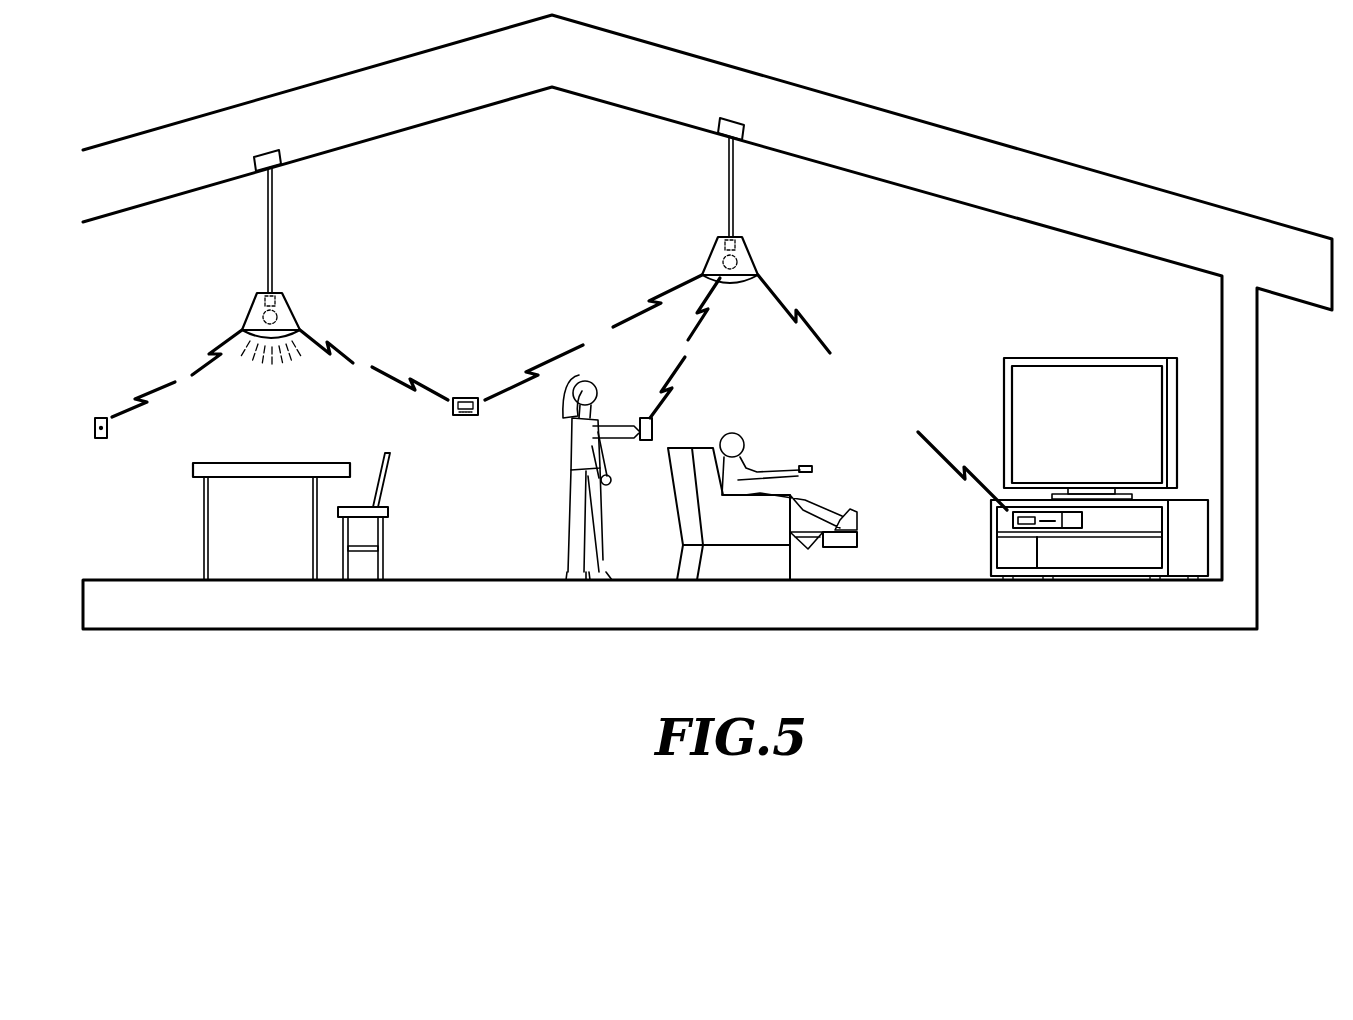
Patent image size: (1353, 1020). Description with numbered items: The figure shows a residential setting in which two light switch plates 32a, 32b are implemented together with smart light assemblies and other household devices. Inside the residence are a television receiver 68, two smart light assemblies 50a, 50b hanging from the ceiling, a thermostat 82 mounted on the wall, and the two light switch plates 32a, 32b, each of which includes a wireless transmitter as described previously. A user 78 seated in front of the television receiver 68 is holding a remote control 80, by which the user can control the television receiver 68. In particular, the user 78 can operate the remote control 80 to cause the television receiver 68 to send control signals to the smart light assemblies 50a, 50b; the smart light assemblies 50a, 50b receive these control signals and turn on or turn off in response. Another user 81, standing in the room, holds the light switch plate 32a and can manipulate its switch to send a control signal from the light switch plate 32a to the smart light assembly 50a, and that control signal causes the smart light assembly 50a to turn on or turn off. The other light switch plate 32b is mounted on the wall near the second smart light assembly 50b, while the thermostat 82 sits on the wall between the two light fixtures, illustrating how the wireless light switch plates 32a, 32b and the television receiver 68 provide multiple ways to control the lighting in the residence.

The smart light assembly 50a is at (681, 254).
The smart light assembly 50b is at (220, 307).
The light switch plate 32a is at (654, 431).
The light switch plate 32b is at (108, 436).
The user 81 is at (591, 375).
The thermostat 82 is at (463, 416).
The user 78 is at (740, 431).
The remote control 80 is at (810, 466).
The television receiver 68 is at (1013, 518).